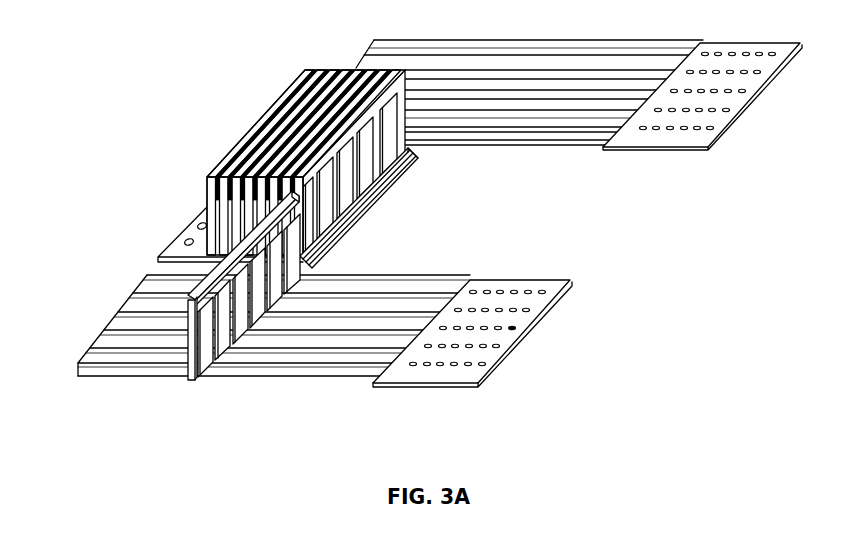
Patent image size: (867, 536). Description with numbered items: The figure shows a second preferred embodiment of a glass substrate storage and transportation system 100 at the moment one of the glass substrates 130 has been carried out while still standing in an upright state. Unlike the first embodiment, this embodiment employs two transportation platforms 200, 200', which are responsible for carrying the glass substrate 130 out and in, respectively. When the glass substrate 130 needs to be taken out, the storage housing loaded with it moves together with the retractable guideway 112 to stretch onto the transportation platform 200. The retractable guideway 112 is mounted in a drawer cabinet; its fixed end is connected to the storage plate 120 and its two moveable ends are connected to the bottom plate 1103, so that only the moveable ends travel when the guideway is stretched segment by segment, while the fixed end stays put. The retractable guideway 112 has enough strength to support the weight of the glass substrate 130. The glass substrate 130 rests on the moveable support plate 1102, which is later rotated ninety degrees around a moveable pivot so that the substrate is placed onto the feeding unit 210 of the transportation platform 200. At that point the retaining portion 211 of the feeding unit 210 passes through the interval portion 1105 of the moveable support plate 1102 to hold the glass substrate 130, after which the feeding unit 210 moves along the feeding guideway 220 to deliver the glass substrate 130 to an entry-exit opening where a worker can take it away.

The heat dissipation device 100 is at (287, 169).
The retractable guideway 112 is at (375, 204).
The moveable support plate 1102 is at (417, 153).
The storage plate 120 is at (185, 255).
The glass substrate 130 is at (284, 218).
The transportation platform 200 is at (333, 336).
The transportation platform 200' is at (513, 81).
The feeding unit 210 is at (506, 333).
The retaining portion 211 is at (514, 328).
The feeding guideway 220 is at (308, 368).
The bottom plate 1103 is at (188, 378).
The interval portion 1105 is at (213, 357).